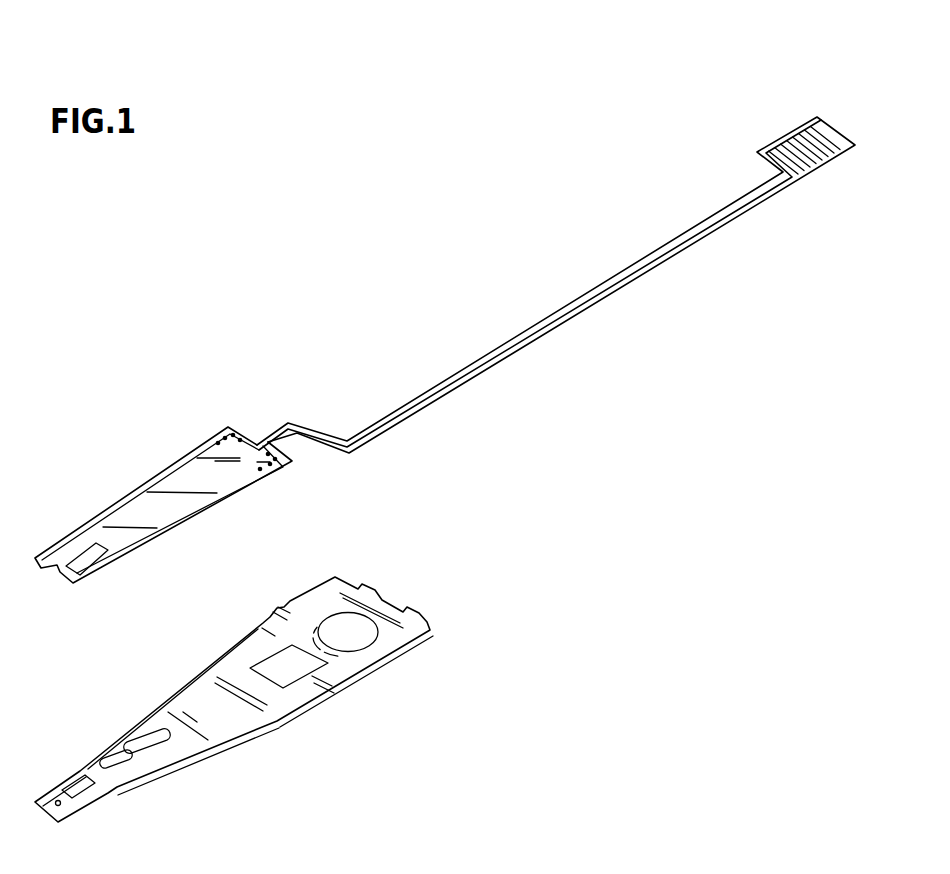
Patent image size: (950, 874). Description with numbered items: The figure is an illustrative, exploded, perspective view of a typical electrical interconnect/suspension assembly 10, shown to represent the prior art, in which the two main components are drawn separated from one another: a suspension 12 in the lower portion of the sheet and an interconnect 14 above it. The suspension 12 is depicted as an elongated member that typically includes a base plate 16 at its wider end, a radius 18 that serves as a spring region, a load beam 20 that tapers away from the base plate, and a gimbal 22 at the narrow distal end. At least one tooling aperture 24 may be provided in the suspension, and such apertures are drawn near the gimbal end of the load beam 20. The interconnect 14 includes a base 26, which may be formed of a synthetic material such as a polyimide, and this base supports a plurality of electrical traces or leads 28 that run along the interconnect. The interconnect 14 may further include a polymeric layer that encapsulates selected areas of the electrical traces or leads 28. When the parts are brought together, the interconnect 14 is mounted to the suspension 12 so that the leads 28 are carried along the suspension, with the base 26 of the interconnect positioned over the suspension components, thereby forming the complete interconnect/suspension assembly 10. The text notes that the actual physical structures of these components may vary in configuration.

The electrical interconnect/suspension assembly 10 is at (608, 339).
The suspension 12 is at (458, 684).
The interconnect 14 is at (416, 250).
The base plate 16 is at (393, 623).
The radius (spring region) 18 is at (257, 652).
The load beam 20 is at (197, 710).
The gimbal 22 is at (92, 798).
The tooling aperture 24 is at (105, 772).
The base 26 is at (198, 466).
The electrical traces or leads 28 is at (157, 523).